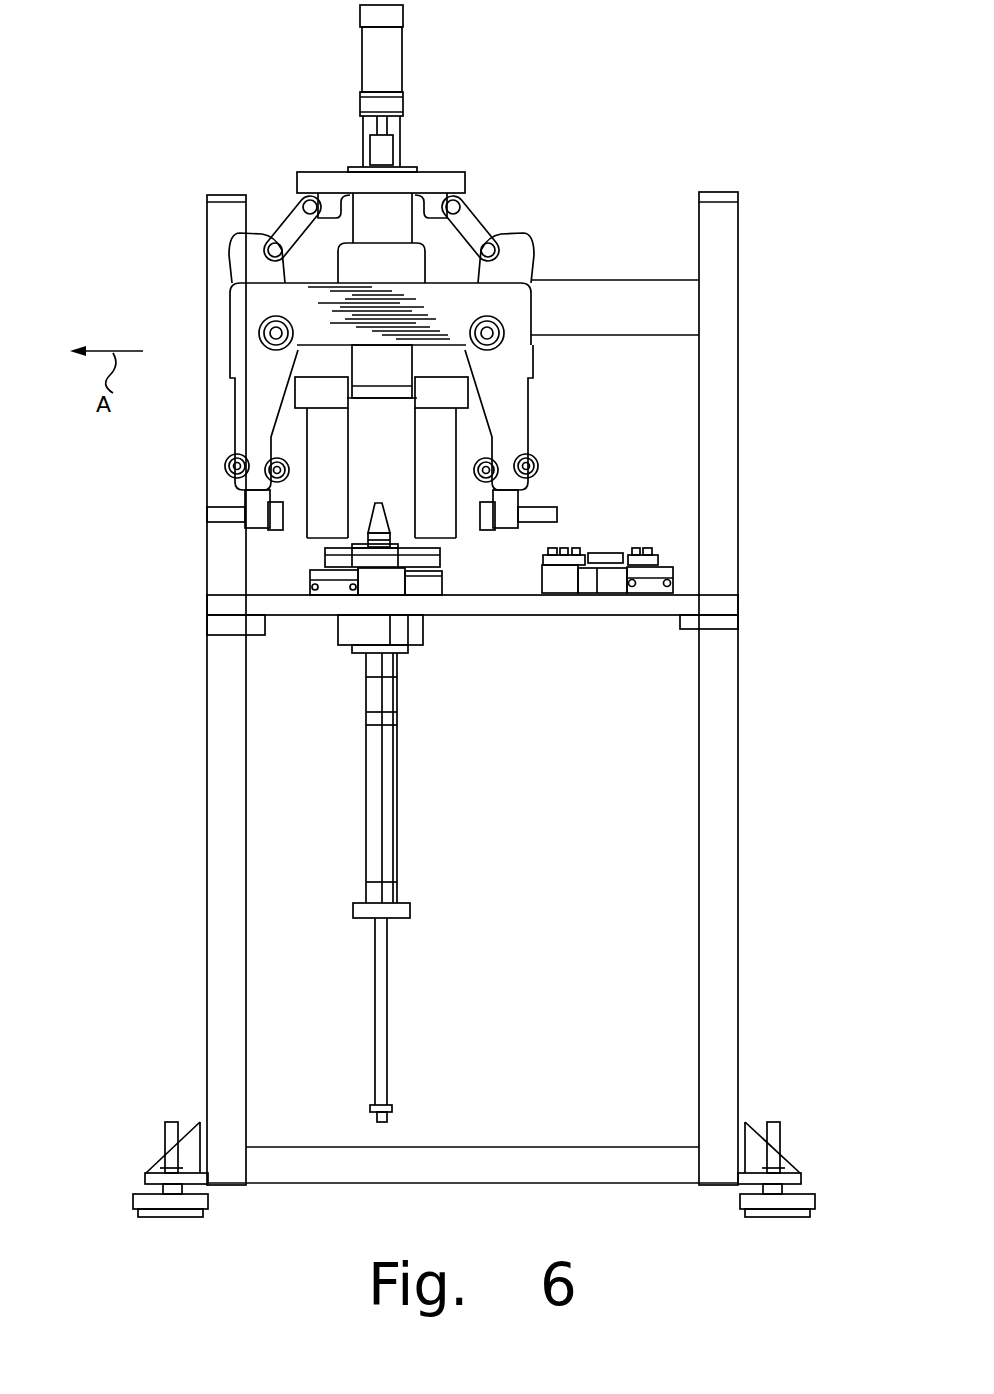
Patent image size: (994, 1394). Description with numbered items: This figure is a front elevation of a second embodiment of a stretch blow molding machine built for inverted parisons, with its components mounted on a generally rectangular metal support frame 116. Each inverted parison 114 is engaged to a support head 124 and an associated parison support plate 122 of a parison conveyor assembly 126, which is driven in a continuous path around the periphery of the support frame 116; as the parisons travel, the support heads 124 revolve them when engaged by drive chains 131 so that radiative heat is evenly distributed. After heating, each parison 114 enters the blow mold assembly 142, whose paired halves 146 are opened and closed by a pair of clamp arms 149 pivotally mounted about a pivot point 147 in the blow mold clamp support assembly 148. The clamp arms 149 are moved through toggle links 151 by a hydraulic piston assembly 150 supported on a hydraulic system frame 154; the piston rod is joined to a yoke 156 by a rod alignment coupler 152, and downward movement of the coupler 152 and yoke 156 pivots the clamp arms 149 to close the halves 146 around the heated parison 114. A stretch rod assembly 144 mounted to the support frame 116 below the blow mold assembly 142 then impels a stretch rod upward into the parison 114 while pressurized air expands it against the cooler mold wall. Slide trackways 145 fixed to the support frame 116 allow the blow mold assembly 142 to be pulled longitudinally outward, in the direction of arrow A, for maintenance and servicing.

The parison 114 is at (381, 503).
The support frame 116 is at (720, 405).
The parison support plate 122 is at (598, 578).
The support head 124 is at (607, 553).
The parison conveyor assembly 126 is at (679, 515).
The drive chains 131 is at (680, 583).
The blow mold assembly 142 is at (570, 462).
The stretch rod assembly 144 is at (398, 817).
The slide trackways 145 is at (647, 308).
The paired halves of blow mold 146 is at (302, 533).
The pivot point 147 is at (262, 335).
The blow mold clamp support assembly 148 is at (440, 305).
The clamp arms 149 is at (228, 397).
The hydraulic piston assembly 150 is at (423, 88).
The toggle links 151 is at (290, 230).
The rod alignment coupler 152 is at (387, 147).
The hydraulic system frame 154 is at (365, 147).
The yoke 156 is at (417, 185).